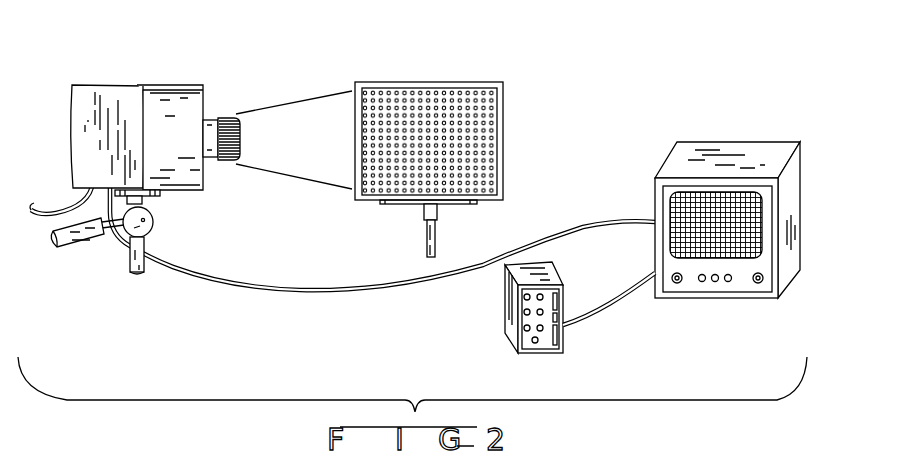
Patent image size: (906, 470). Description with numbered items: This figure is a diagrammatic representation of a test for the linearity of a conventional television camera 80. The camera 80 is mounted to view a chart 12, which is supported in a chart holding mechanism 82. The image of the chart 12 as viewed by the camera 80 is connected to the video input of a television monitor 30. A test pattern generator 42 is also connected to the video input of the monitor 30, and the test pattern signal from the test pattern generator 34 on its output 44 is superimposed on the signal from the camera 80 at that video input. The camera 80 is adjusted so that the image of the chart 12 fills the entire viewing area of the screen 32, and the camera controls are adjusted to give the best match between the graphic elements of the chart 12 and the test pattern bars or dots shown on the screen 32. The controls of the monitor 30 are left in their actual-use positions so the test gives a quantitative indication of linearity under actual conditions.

The television camera 80 is at (170, 100).
The chart 12 is at (450, 92).
The chart holding mechanism 82 is at (503, 168).
The television monitor 30 is at (767, 150).
The screen 32 is at (680, 237).
The test pattern generator 34 is at (723, 299).
The test pattern generator 42 is at (508, 300).
The output 44 is at (631, 293).